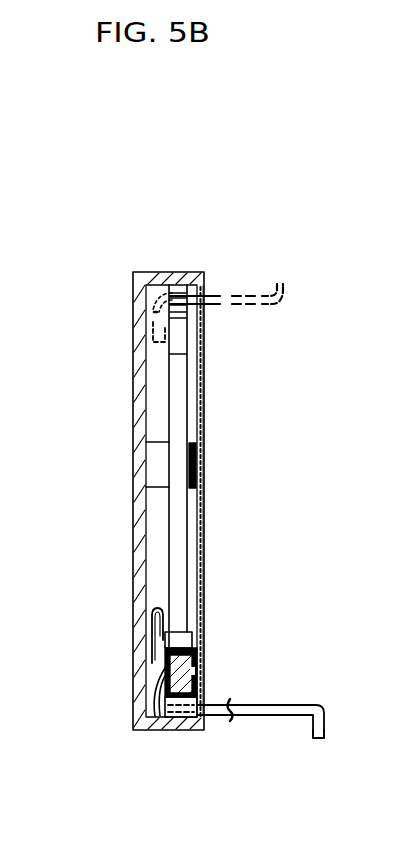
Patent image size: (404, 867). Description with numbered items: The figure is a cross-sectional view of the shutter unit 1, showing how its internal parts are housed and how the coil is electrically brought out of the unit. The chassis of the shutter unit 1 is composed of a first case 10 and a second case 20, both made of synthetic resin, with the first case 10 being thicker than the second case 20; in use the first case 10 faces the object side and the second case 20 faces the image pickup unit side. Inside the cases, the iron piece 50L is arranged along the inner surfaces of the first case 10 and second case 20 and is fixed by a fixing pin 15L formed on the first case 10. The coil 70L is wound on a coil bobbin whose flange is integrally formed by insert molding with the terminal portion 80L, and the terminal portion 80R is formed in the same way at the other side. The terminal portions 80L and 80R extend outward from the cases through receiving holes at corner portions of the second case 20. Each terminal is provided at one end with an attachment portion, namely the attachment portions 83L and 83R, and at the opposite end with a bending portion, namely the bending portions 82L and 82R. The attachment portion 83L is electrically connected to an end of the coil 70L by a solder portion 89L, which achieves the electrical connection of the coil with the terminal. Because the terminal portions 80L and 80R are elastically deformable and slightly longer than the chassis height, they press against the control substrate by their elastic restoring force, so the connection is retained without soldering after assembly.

The shutter unit 1 is at (158, 226).
The first case 10 is at (133, 280).
The fixing pin 15L is at (158, 467).
The second case 20 is at (190, 430).
The iron piece 50L is at (177, 533).
The coil 70L is at (163, 622).
The terminal portion 80R is at (243, 313).
The bending portion 82R is at (284, 286).
The attachment portion 83R is at (150, 313).
The terminal portion 80L is at (283, 705).
The bending portion 82L is at (325, 720).
The attachment portion 83L is at (158, 728).
The solder portion 89L is at (152, 680).